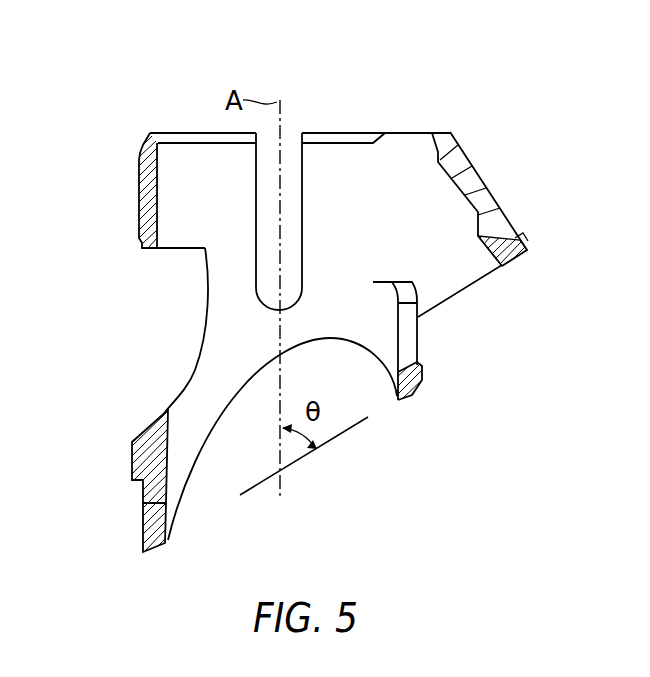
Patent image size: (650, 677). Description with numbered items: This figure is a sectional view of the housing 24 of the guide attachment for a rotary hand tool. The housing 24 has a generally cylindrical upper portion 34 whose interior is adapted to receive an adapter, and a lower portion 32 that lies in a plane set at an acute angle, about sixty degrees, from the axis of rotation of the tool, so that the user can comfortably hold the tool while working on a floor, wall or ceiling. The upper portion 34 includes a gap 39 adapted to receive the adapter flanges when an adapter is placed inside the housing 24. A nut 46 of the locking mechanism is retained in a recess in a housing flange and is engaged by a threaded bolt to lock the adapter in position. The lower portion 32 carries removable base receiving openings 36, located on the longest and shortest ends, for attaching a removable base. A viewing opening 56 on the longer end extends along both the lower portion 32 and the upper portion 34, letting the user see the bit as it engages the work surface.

The housing 24 is at (184, 104).
The lower portion 32 is at (160, 503).
The upper portion 34 is at (403, 152).
The removable base receiving openings 36 is at (407, 334).
The gap 39 is at (288, 168).
The nut 46 is at (463, 170).
The viewing opening 56 is at (185, 297).